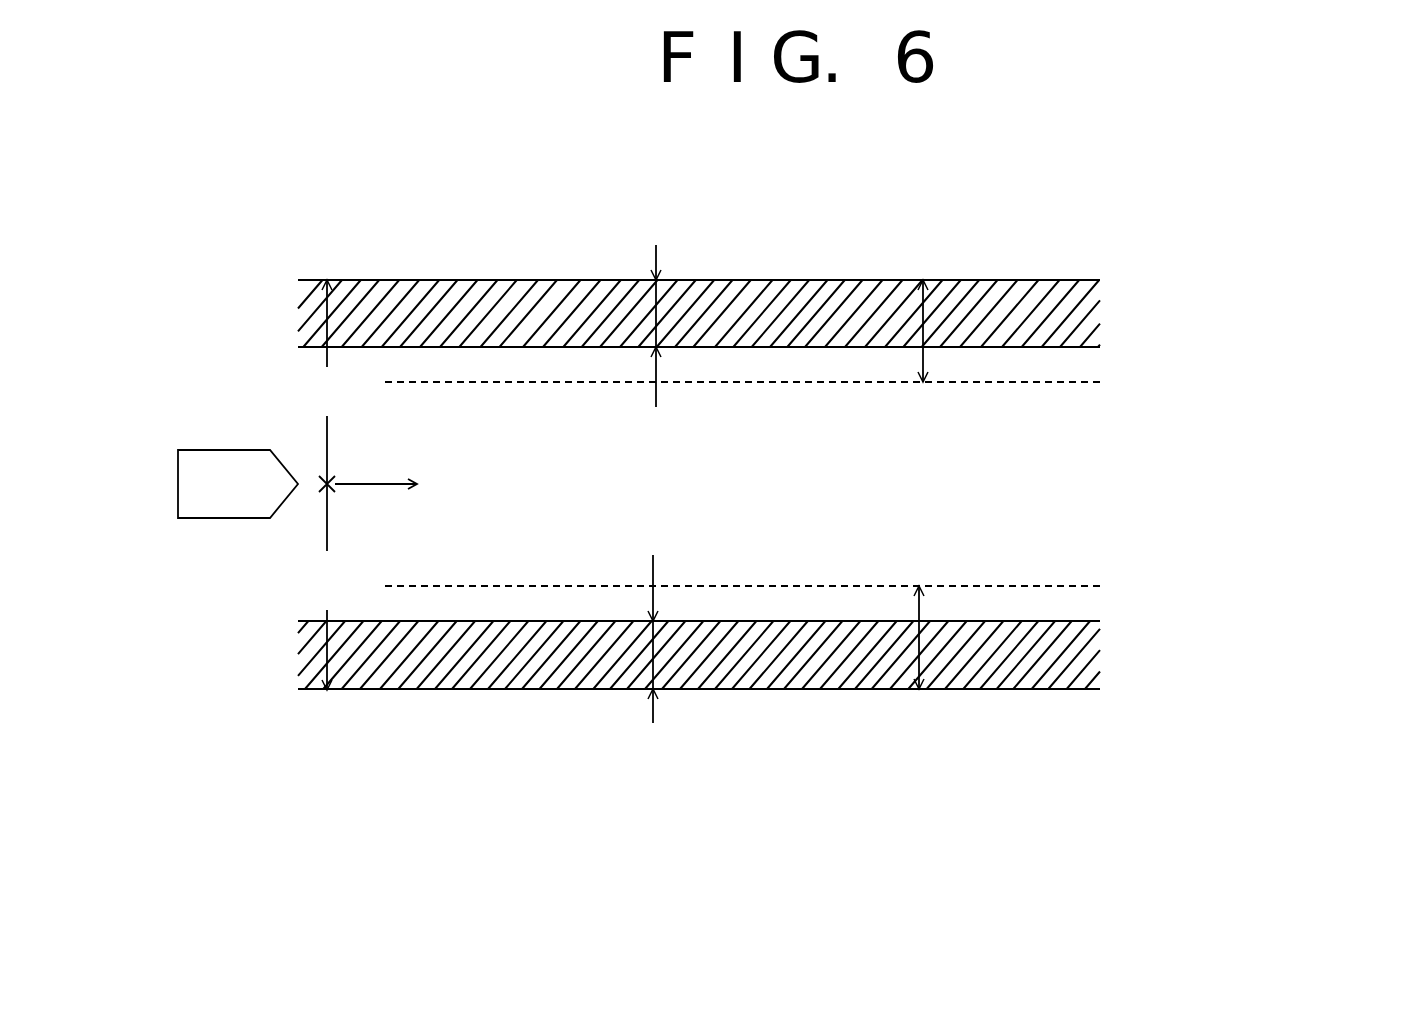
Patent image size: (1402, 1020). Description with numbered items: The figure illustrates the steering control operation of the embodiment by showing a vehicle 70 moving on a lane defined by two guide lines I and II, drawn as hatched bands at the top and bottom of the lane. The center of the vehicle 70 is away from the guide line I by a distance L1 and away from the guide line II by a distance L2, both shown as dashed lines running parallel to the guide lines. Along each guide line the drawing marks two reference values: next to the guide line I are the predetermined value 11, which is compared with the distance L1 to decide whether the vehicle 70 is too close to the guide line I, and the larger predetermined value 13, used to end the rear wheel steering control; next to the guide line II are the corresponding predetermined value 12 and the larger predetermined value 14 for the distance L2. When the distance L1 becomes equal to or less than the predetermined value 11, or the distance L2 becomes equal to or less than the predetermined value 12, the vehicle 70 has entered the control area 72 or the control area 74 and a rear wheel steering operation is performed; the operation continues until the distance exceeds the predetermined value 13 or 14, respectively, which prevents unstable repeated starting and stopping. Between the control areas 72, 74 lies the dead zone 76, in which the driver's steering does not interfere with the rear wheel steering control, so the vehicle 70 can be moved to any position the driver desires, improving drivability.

The vehicle 70 is at (188, 484).
The control area 72 is at (1121, 632).
The control area 74 is at (1121, 280).
The dead zone 76 is at (818, 487).
The predetermined value 11 is at (684, 639).
The predetermined value 12 is at (685, 326).
The predetermined value 13 is at (889, 637).
The predetermined value 14 is at (891, 331).
The guide line I is at (567, 690).
The guide line II is at (520, 280).
The distance L1 is at (709, 587).
The distance L2 is at (709, 384).